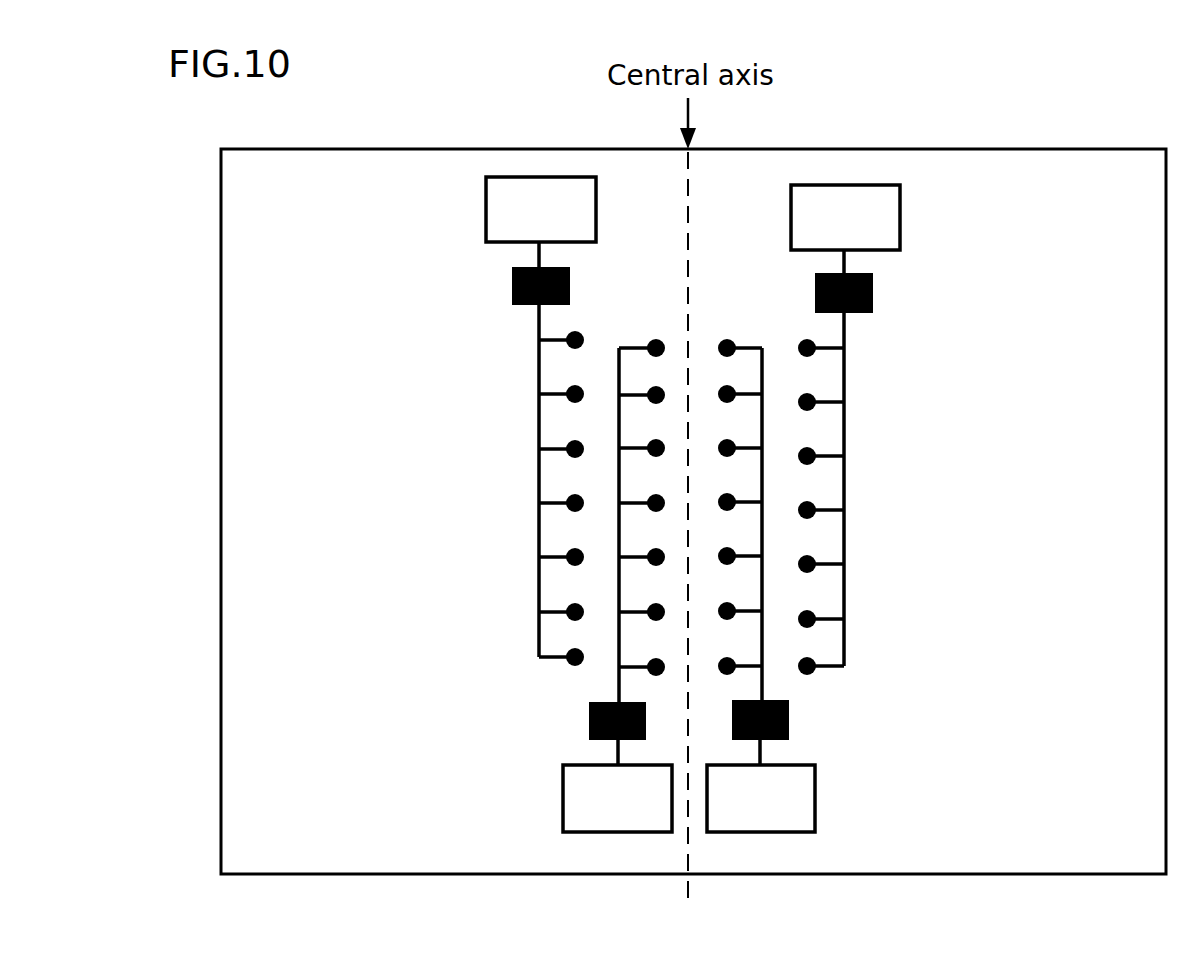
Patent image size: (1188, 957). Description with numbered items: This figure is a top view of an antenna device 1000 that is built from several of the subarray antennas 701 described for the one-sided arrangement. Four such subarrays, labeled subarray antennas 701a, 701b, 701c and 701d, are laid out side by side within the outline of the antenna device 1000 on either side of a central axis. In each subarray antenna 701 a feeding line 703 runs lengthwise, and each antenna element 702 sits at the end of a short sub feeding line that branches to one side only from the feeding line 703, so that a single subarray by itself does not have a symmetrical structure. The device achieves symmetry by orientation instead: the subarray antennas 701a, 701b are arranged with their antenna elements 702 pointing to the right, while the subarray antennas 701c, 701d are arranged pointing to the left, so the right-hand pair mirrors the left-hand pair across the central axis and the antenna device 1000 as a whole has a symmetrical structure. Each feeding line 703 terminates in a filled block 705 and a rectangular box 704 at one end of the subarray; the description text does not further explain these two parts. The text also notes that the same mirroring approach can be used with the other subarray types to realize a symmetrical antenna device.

The antenna device 1000 is at (1060, 147).
The subarray antenna 701 is at (977, 347).
The subarray antenna 701a is at (537, 528).
The subarray antenna 701b is at (612, 681).
The subarray antenna 701c is at (807, 554).
The subarray antenna 701d is at (882, 430).
The antenna element 702 is at (814, 399).
The feeding line 703 is at (845, 491).
The terminal 704 is at (815, 785).
The connection portion 705 is at (790, 722).